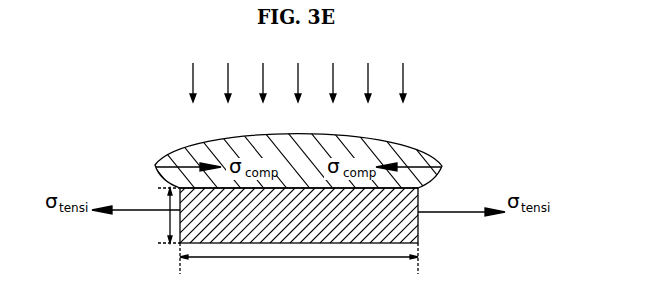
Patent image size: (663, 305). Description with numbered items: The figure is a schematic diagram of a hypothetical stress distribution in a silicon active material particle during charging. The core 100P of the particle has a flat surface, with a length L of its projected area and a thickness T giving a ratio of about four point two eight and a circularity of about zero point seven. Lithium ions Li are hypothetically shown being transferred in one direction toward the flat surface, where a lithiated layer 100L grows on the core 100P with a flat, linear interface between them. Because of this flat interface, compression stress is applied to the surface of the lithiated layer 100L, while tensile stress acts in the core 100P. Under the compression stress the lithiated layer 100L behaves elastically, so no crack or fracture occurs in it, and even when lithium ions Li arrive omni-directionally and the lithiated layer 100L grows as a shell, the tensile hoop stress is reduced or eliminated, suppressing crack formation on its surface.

The lithiated layer 100L is at (418, 146).
The core of the active material particle 100P is at (418, 228).
The thickness T is at (166, 215).
The length of a projected area L is at (299, 264).
The lithium ions Li is at (298, 67).